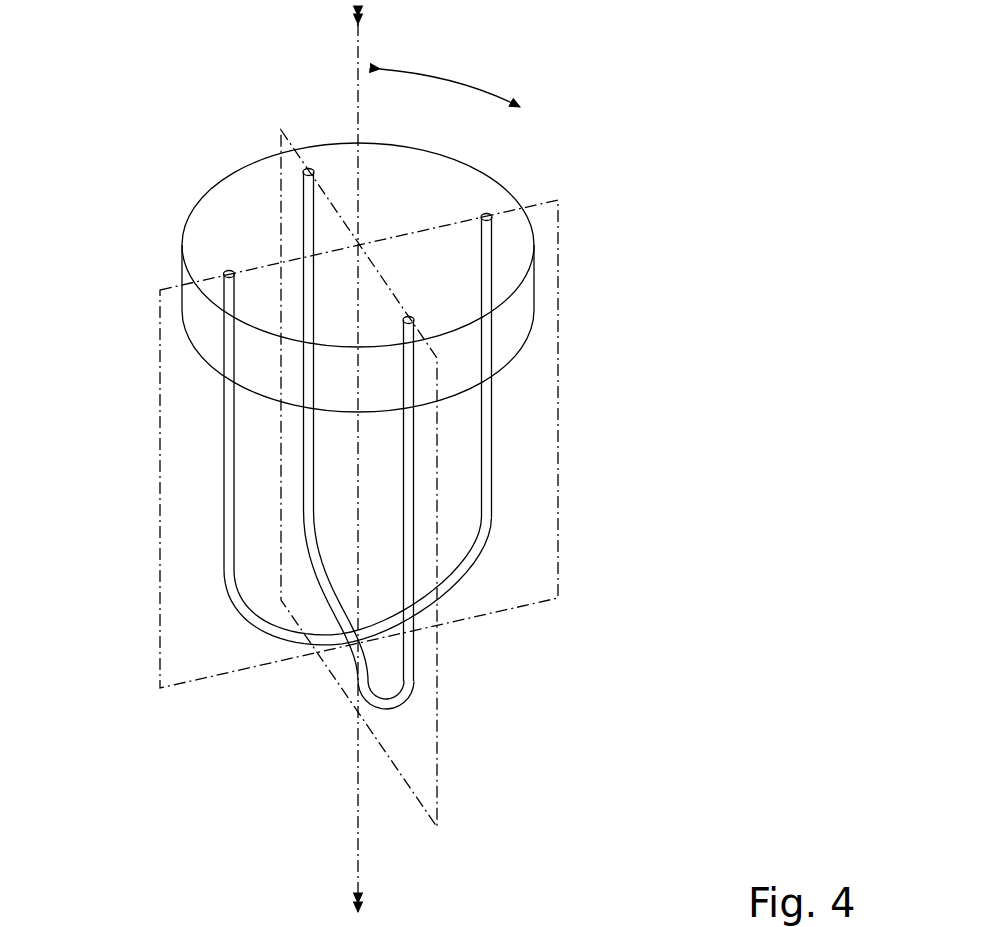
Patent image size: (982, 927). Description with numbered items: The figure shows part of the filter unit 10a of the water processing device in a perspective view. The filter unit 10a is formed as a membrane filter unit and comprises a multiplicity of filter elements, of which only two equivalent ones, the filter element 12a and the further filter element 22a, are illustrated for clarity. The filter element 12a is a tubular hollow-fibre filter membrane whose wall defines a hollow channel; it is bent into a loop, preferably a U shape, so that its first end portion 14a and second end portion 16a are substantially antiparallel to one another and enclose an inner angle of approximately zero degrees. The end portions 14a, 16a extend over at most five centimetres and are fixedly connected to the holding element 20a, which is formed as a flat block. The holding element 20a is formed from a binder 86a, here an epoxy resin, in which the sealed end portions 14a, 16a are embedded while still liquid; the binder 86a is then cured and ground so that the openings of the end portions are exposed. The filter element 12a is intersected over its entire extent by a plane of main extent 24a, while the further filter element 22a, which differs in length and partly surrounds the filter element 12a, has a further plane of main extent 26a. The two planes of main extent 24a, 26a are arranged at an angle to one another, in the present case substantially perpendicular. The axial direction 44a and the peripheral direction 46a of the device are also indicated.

The filter unit 10a is at (360, 466).
The filter element 12a is at (353, 492).
The first end portion 14a is at (500, 322).
The second end portion 16a is at (217, 328).
The holding element 20a is at (545, 258).
The further filter element 22a is at (348, 662).
The plane of main extent 24a is at (558, 405).
The further plane of main extent 26a is at (437, 718).
The axial direction 44a is at (355, 100).
The peripheral direction 46a is at (463, 80).
The binder 86a is at (442, 180).